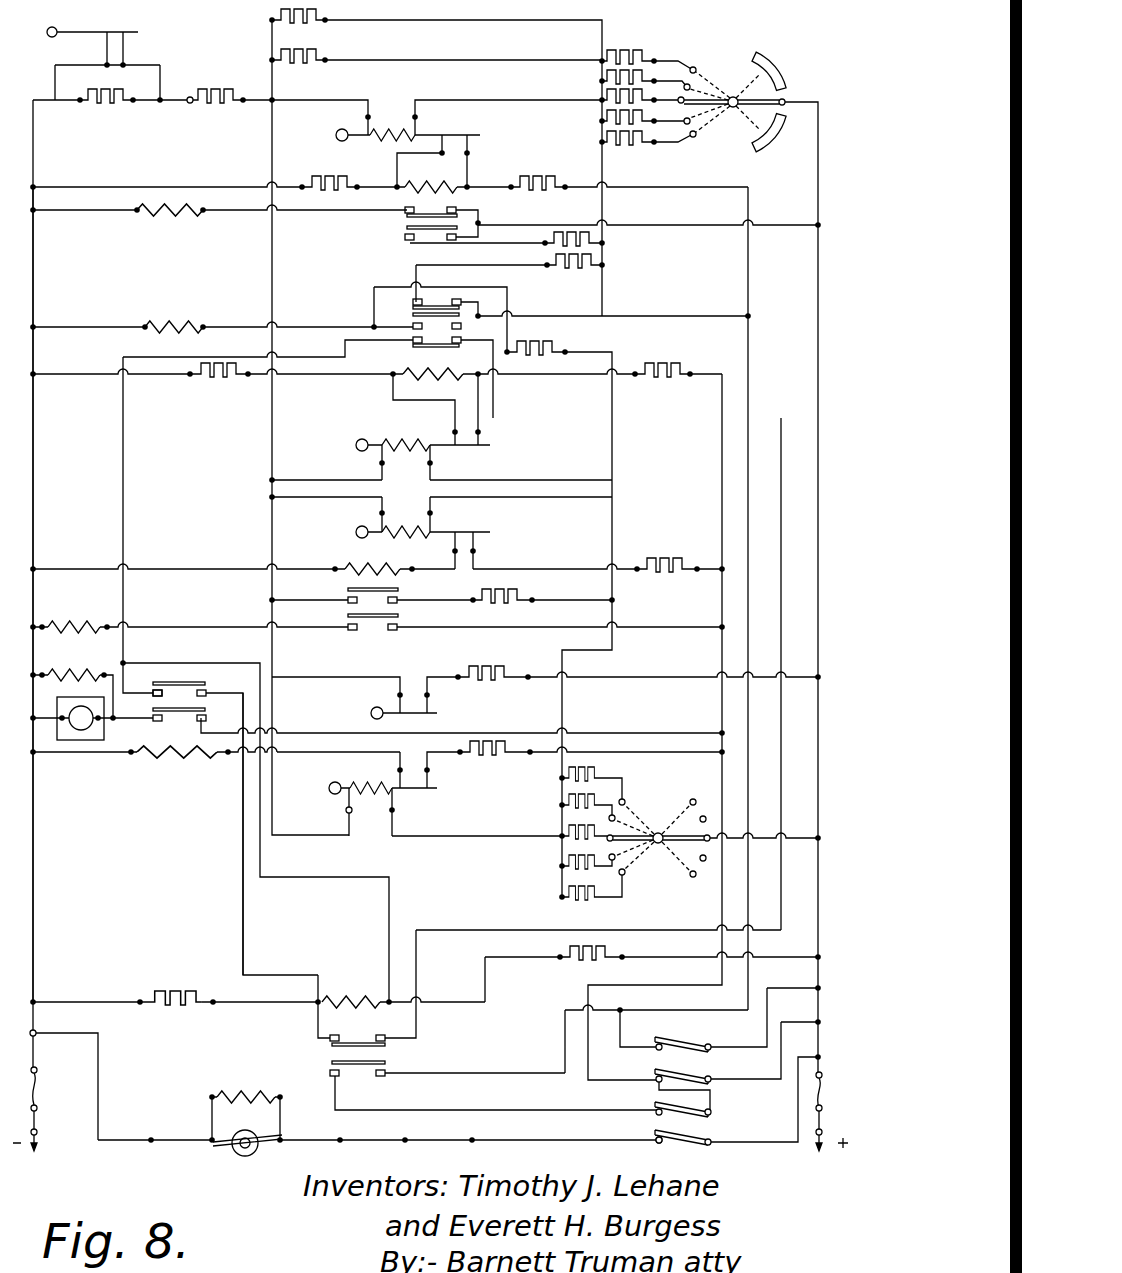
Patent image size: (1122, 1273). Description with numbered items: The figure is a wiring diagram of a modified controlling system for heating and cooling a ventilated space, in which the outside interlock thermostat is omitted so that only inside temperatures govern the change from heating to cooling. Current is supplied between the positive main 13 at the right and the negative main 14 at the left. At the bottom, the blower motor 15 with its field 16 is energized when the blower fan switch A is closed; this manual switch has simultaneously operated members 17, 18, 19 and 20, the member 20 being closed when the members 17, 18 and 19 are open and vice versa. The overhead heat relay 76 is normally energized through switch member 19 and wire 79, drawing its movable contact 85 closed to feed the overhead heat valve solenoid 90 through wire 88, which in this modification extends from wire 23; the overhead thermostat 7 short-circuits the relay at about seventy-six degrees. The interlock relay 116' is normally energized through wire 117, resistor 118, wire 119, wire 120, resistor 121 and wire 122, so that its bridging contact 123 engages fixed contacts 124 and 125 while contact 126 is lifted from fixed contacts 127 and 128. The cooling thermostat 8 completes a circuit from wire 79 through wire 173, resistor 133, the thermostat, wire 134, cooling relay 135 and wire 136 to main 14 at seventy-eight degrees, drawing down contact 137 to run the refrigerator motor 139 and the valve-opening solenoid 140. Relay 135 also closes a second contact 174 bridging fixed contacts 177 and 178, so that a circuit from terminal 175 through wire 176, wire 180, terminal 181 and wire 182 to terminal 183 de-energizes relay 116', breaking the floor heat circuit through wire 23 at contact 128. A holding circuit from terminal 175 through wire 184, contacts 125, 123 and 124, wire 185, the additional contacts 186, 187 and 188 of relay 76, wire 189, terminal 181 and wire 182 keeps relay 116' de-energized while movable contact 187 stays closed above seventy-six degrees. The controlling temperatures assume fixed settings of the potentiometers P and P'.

The overhead thermostat 7 is at (476, 454).
The cooling thermostat 8 is at (415, 792).
The positive main 13 is at (823, 527).
The negative main 14 is at (35, 507).
The blower motor 15 is at (244, 1157).
The field 16 is at (240, 1092).
The switch member 17 is at (701, 1136).
The switch member 18 is at (655, 1101).
The switch member 19 is at (690, 1076).
The switch member 20 is at (686, 1040).
The wire 23 is at (749, 385).
The overhead heat relay 76 is at (443, 378).
The wire 79 is at (720, 778).
The movable contact 85 is at (411, 317).
The wire 88 is at (643, 316).
The solenoid coil 90 is at (182, 332).
The interlock relay 116' is at (351, 981).
The wire 117 is at (694, 961).
The resistor 118 is at (609, 949).
The wire 119 is at (522, 963).
The wire 120 is at (225, 1000).
The resistor 121 is at (180, 976).
The wire 122 is at (100, 984).
The bridging contact 123 is at (360, 1042).
The fixed contact 124 is at (386, 1041).
The fixed contact 125 is at (330, 1043).
The contact 126 is at (360, 1073).
The fixed contact 127 is at (386, 1076).
The fixed contact 128 is at (333, 1079).
The resistor 133 is at (495, 765).
The wire 134 is at (309, 758).
The cooling relay 135 is at (186, 758).
The wire 136 is at (100, 758).
The contact 137 is at (178, 713).
The refrigerator motor 139 is at (78, 730).
The solenoid 140 is at (77, 669).
The wire 173 is at (618, 752).
The contact 174 is at (197, 683).
The terminal 175 is at (319, 996).
The wire 176 is at (243, 896).
The fixed contact 177 is at (207, 693).
The fixed contact 178 is at (153, 697).
The wire 180 is at (127, 676).
The terminal 181 is at (122, 663).
The wire 182 is at (183, 663).
The terminal 183 is at (392, 1002).
The wire 184 is at (316, 1031).
The wire 185 is at (782, 598).
The contact 186 is at (463, 340).
The movable contact 187 is at (436, 347).
The contact 188 is at (411, 344).
The wire 189 is at (307, 354).
The blower fan switch A is at (681, 1153).
The potentiometer P is at (694, 101).
The potentiometer P' is at (690, 833).